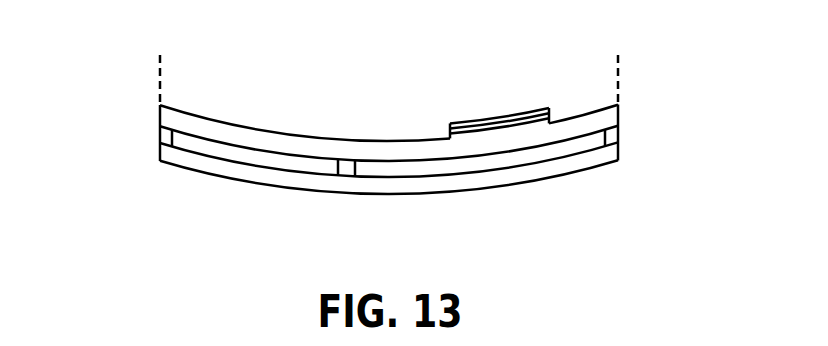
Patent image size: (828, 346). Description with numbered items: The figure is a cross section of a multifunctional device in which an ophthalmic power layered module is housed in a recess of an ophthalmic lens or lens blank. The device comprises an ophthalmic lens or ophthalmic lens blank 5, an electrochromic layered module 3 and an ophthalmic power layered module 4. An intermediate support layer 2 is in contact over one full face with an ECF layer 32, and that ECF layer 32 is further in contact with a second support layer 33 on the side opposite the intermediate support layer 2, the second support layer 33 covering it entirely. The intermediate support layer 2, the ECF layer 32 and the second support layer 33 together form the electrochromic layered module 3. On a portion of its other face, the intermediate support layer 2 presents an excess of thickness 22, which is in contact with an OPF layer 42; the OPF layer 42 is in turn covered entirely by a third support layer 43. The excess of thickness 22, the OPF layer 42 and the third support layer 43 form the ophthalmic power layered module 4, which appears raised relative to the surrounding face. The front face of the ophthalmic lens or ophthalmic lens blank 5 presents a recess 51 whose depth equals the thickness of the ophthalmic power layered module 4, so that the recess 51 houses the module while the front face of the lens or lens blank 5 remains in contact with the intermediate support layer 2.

The intermediate support layer 2 is at (160, 117).
The electrochromic layered module 3 is at (631, 105).
The ophthalmic power layered module 4 is at (484, 80).
The ophthalmic lens or ophthalmic lens blank 5 is at (188, 93).
The excess of thickness 22 is at (463, 139).
The ECF layer 32 is at (527, 157).
The second support layer 33 is at (487, 180).
The OPF layer 42 is at (549, 111).
The third support layer 43 is at (450, 121).
The recess 51 is at (545, 110).